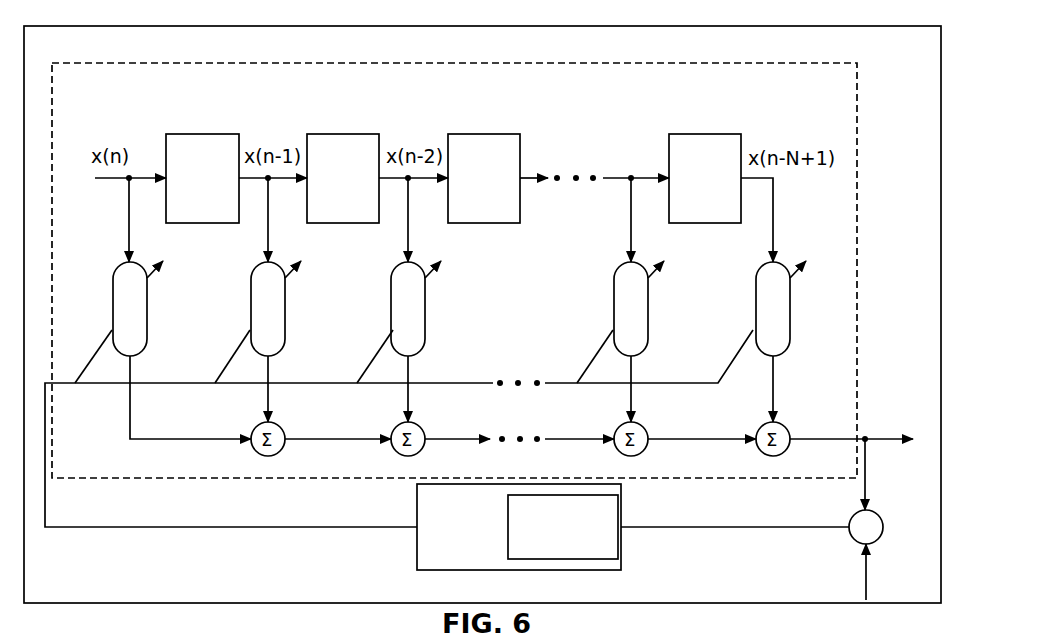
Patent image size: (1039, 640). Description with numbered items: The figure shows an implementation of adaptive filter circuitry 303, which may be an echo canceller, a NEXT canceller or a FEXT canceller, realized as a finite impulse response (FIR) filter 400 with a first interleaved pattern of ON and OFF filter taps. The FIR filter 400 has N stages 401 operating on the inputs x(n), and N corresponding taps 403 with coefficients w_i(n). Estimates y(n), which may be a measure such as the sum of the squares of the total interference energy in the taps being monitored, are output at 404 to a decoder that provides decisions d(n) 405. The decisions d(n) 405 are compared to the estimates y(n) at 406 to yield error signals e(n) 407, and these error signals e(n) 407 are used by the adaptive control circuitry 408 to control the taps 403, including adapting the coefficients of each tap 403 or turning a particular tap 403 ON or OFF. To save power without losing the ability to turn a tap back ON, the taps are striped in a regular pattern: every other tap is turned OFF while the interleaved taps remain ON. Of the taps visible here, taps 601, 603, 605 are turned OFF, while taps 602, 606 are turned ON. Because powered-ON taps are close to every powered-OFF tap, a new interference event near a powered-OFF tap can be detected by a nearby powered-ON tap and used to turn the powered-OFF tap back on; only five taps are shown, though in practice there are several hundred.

The adaptive filter circuitry 303 is at (90, 26).
The finite impulse response (FIR) filter 400 is at (118, 63).
The stages 401 is at (203, 134).
The taps 403 is at (113, 292).
The estimates y(n) output 404 is at (870, 442).
The decisions d(n) 405 is at (863, 580).
The comparison 406 is at (883, 527).
The error signals e(n) 407 is at (737, 527).
The adaptive control circuitry 408 is at (417, 548).
The tap 601 is at (148, 304).
The tap 602 is at (286, 304).
The tap 603 is at (426, 304).
The tap 605 is at (649, 304).
The tap 606 is at (790, 302).